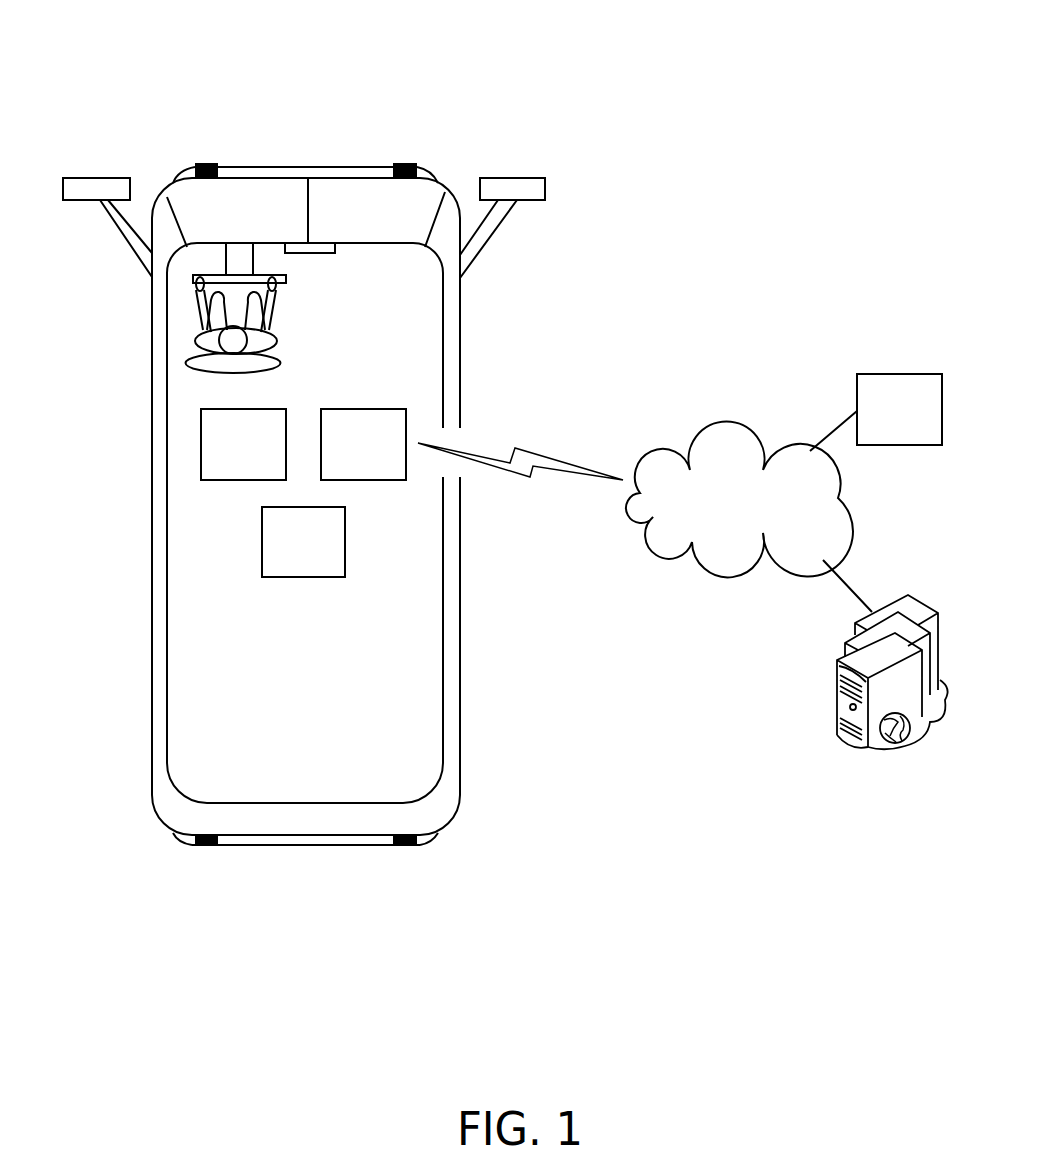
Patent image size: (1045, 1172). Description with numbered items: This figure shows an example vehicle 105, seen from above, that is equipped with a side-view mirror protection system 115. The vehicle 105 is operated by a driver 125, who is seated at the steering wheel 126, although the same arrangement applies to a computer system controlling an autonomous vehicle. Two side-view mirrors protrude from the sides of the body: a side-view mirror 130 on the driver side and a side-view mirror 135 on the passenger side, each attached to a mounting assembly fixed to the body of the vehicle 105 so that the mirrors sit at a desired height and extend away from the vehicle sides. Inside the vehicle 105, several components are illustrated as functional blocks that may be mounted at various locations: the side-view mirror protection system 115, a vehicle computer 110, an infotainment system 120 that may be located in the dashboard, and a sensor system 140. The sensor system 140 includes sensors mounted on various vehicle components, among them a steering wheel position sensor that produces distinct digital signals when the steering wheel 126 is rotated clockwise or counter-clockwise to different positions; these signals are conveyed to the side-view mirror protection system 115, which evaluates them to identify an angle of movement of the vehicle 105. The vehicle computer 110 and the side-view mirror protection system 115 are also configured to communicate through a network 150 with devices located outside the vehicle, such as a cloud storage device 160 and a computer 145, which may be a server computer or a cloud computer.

The vehicle 105 is at (474, 92).
The vehicle computer 110 is at (225, 457).
The side-view mirror protection system 115 is at (345, 457).
The infotainment system 120 is at (303, 253).
The driver 125 is at (277, 339).
The steering wheel 126 is at (283, 284).
The side-view mirror 130 is at (95, 200).
The side-view mirror 135 is at (515, 200).
The sensor system 140 is at (285, 555).
The computer 145 is at (816, 722).
The network 150 is at (815, 514).
The cloud storage device 160 is at (918, 420).